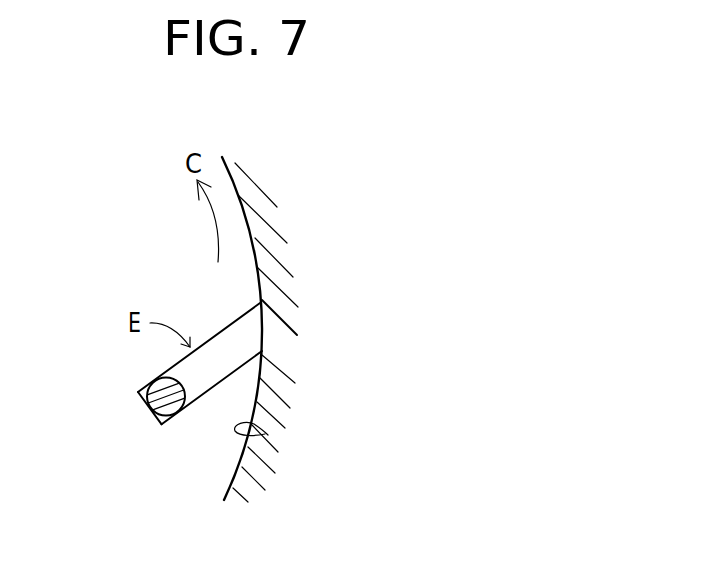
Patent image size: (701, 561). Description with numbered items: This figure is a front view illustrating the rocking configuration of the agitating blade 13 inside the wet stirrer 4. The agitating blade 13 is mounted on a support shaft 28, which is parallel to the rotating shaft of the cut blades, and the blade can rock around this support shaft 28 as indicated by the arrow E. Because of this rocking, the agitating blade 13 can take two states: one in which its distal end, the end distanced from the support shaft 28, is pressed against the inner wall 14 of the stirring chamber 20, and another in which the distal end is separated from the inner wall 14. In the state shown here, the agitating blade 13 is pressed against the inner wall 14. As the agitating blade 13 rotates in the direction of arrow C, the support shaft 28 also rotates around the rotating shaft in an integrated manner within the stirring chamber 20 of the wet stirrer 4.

The wet stirrer 4 is at (252, 190).
The agitating blade 13 is at (240, 348).
The inner wall 14 is at (265, 434).
The stirring chamber 20 is at (104, 272).
The support shaft 28 is at (150, 406).